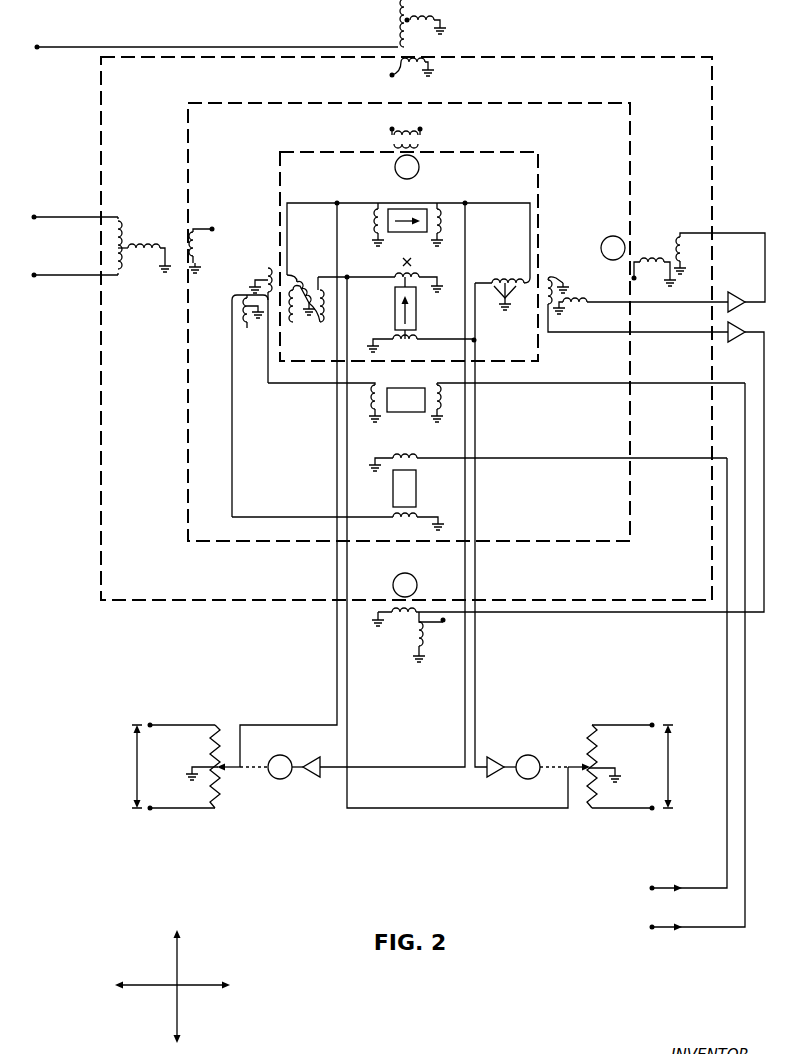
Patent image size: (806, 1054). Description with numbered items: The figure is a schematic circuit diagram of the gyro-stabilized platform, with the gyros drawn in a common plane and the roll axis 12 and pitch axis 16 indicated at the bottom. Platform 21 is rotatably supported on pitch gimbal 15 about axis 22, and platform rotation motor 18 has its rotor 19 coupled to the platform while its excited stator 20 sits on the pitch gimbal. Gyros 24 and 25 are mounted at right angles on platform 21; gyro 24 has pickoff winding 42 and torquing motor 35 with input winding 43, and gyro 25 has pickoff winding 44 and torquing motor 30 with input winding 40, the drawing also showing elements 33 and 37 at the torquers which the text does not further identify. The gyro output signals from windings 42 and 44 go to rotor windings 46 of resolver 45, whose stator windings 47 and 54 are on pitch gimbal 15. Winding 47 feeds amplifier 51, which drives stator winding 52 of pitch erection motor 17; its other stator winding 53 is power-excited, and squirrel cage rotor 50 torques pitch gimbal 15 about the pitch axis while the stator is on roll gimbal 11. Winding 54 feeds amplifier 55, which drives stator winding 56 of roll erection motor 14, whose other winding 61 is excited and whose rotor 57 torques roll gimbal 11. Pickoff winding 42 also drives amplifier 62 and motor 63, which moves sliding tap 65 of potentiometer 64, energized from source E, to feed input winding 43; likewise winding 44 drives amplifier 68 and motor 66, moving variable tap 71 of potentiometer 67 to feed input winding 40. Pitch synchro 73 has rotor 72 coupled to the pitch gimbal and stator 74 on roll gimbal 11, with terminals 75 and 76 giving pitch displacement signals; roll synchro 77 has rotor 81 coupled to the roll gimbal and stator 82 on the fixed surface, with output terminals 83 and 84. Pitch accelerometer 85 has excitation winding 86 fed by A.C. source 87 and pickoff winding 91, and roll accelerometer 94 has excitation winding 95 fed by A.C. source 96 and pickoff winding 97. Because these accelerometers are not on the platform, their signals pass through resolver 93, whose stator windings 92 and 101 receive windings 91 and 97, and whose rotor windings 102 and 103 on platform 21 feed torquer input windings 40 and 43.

The roll gimbal 11 is at (716, 160).
The roll axis 12 is at (180, 960).
The roll erection motor 14 is at (424, 609).
The pitch gimbal 15 is at (632, 163).
The pitch axis 16 is at (185, 988).
The pitch erection motor 17 is at (622, 235).
The platform rotation motor 18 is at (424, 157).
The rotor 19 is at (394, 166).
The stator 20 is at (390, 146).
The platform 21 is at (540, 181).
The axis 22 is at (425, 261).
The gyro 24 is at (418, 200).
The gyro 25 is at (416, 320).
The torquing motor 30 is at (372, 291).
The torquer connection 33 is at (408, 232).
The torquing motor 35 is at (384, 204).
The torquer connection 37 is at (395, 320).
The input winding 40 is at (422, 283).
The pickoff winding 42 is at (440, 222).
The input winding 43 is at (376, 221).
The pickoff winding 44 is at (415, 343).
The resolver 45 is at (543, 309).
The rotor windings 46 is at (512, 280).
The resolver stator winding 47 is at (583, 308).
The squirrel cage rotor 50 is at (607, 240).
The amplifier 51 is at (737, 292).
The stator winding 52 is at (684, 248).
The stator winding 53 is at (656, 256).
The second stator winding 54 is at (558, 276).
The amplifier 55 is at (737, 336).
The stator winding 56 is at (410, 618).
The rotor 57 is at (393, 585).
The stator winding 61 is at (415, 637).
The amplifier 62 is at (311, 777).
The motor 63 is at (283, 779).
The potentiometer 64 is at (196, 724).
The sliding tap 65 is at (232, 770).
The motor 66 is at (530, 779).
The potentiometer 67 is at (605, 720).
The amplifier 68 is at (494, 777).
The variable tap 71 is at (576, 762).
The rotor 72 is at (200, 253).
The pitch synchro 73 is at (188, 238).
The pitch synchro stator 74 is at (146, 260).
The terminal 75 is at (36, 278).
The terminal 76 is at (36, 220).
The roll synchro 77 is at (432, 38).
The rotor 81 is at (410, 70).
The stator 82 is at (400, 30).
The output terminal 83 is at (38, 49).
The output terminal 84 is at (44, 0).
The pitch accelerometer 85 is at (405, 412).
The excitation winding 86 is at (443, 400).
The A.C. source 87 is at (652, 930).
The pickoff winding 91 is at (324, 402).
The stator winding 92 is at (256, 288).
The resolver 93 is at (289, 270).
The roll accelerometer 94 is at (393, 490).
The input excitation winding 95 is at (400, 456).
The A.C. source 96 is at (653, 885).
The pickoff winding 97 is at (406, 522).
The stator winding 101 is at (251, 406).
The rotor winding 102 is at (312, 316).
The rotor winding 103 is at (292, 311).